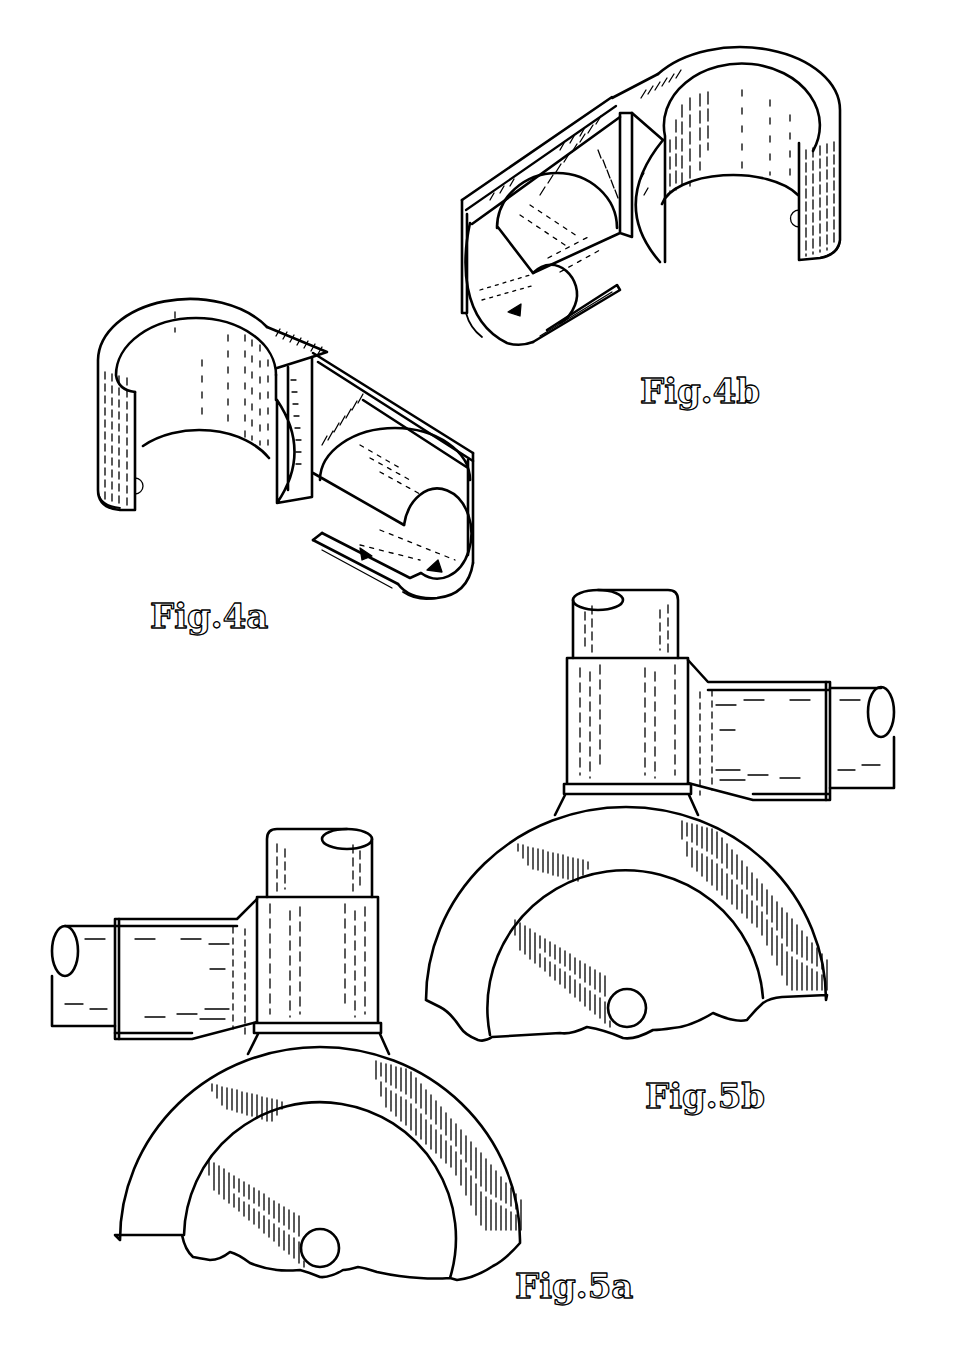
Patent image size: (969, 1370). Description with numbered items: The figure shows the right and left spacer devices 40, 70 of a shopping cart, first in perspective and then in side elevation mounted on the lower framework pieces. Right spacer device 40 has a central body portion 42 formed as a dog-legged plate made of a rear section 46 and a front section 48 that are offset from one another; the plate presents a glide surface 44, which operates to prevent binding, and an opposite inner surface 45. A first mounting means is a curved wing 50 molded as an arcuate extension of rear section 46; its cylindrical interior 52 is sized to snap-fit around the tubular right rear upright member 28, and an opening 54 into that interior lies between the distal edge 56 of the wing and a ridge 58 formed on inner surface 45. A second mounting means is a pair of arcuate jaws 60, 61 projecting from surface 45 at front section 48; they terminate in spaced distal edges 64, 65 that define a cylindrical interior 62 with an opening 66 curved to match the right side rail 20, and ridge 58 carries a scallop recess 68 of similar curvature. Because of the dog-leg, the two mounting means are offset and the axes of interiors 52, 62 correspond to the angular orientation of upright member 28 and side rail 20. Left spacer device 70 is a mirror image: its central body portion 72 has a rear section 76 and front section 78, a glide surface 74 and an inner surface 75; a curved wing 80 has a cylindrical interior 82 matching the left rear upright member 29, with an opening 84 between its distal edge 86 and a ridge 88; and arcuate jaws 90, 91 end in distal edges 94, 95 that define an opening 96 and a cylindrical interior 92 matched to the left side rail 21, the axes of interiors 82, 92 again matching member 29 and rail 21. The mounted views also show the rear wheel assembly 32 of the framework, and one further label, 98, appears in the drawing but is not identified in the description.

In FIG. 5A, the right side rail 20 is at (86, 916).
In FIG. 5B, the left side rail 21 is at (860, 797).
In FIG. 5A, the right rear upright member 28 is at (365, 853).
In FIG. 5B, the left rear upright member 29 is at (670, 623).
In FIG. 5B, the rear wheel assembly 32 is at (777, 982).
In FIG. 5A, the rear wheel assembly 32 is at (485, 1145).
In FIG. 4A, the right spacer device 40 is at (332, 322).
In FIG. 5A, the right spacer device 40 is at (192, 826).
In FIG. 4A, the central body portion 42 is at (444, 440).
In FIG. 5A, the central body portion 42 is at (205, 908).
In FIG. 5A, the glide surface 44 is at (190, 980).
In FIG. 4A, the inner surface 45 is at (372, 395).
In FIG. 4A, the rear section 46 is at (262, 303).
In FIG. 5A, the rear section 46 is at (365, 904).
In FIG. 5A, the front section 48 is at (150, 1040).
In FIG. 4A, the curved wing 50 is at (186, 326).
In FIG. 4A, the cylindrical interior 52 is at (232, 322).
In FIG. 4A, the opening 54 is at (172, 496).
In FIG. 4A, the distal edge 56 is at (118, 482).
In FIG. 4A, the ridge 58 is at (277, 390).
In FIG. 4A, the arcuate jaw 60 is at (355, 494).
In FIG. 4A, the arcuate jaw 61 is at (430, 600).
In FIG. 4A, the cylindrical interior 62 is at (455, 580).
In FIG. 4A, the distal edge 64 is at (350, 522).
In FIG. 4A, the distal edge 65 is at (376, 586).
In FIG. 4A, the opening 66 is at (333, 568).
In FIG. 4A, the scallop recess 68 is at (287, 481).
In FIG. 4B, the left spacer device 70 is at (528, 95).
In FIG. 4B, the central body portion 72 is at (482, 192).
In FIG. 5B, the central body portion 72 is at (737, 677).
In FIG. 5B, the glide surface 74 is at (755, 742).
In FIG. 4B, the inner surface 75 is at (566, 160).
In FIG. 5B, the rear section 76 is at (566, 684).
In FIG. 5B, the front section 78 is at (790, 680).
In FIG. 4B, the curved wing 80 is at (787, 56).
In FIG. 4B, the cylindrical interior 82 is at (722, 84).
In FIG. 4B, the opening 84 is at (756, 226).
In FIG. 4B, the distal edge 86 is at (812, 242).
In FIG. 4B, the ridge 88 is at (665, 138).
In FIG. 4B, the arcuate jaw 90 is at (652, 222).
In FIG. 4B, the arcuate jaw 91 is at (524, 347).
In FIG. 4B, the cylindrical interior 92 is at (515, 306).
In FIG. 4B, the distal edge 94 is at (592, 306).
In FIG. 4B, the distal edge 95 is at (577, 323).
In FIG. 4B, the opening 96 is at (620, 276).
In FIG. 4B, the bottom inner surface 98 is at (670, 222).